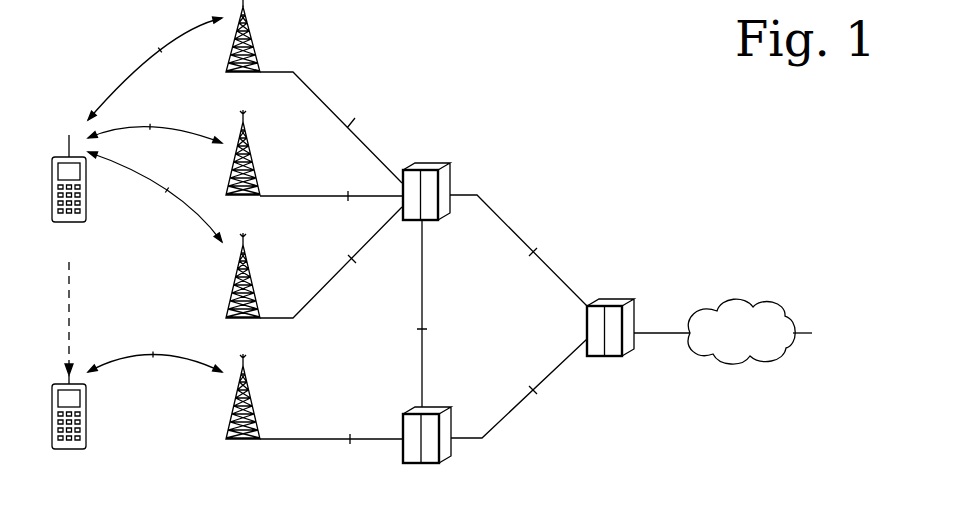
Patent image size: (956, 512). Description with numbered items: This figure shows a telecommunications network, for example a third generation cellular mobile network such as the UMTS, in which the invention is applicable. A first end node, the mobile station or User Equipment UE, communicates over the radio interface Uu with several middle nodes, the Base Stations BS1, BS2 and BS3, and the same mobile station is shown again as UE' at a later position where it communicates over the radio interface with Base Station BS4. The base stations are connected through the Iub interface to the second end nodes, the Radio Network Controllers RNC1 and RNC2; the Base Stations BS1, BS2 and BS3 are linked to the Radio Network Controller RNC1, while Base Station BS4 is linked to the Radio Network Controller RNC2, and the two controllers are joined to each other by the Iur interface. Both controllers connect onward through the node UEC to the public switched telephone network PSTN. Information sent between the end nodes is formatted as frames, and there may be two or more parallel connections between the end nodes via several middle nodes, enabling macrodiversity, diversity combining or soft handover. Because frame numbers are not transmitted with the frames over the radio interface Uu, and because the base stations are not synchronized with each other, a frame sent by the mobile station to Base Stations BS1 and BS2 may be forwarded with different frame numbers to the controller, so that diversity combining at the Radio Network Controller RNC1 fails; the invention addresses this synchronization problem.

The User Equipment UE is at (69, 190).
The User Equipment UE' is at (69, 367).
The radio interface Uu is at (155, 194).
The Base Station BS1 is at (243, 49).
The Base Station BS2 is at (243, 165).
The Base Station BS3 is at (243, 287).
The Base Station BS4 is at (243, 412).
The Iub interface Iub is at (331, 258).
The Radio Network Controller RNC1 is at (426, 181).
The Iur interface Iur is at (437, 313).
The Radio Network Controller RNC2 is at (427, 448).
The element UEC is at (542, 316).
The public switched telephone network PSTN is at (723, 331).